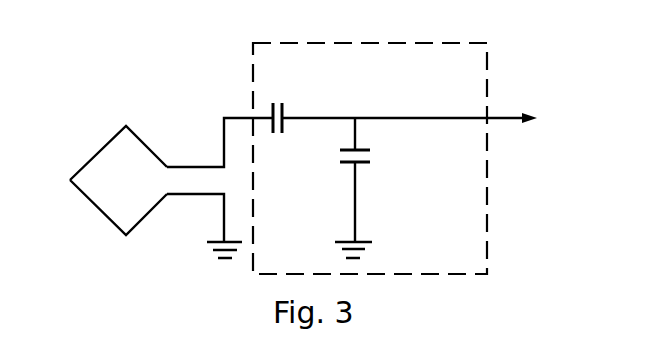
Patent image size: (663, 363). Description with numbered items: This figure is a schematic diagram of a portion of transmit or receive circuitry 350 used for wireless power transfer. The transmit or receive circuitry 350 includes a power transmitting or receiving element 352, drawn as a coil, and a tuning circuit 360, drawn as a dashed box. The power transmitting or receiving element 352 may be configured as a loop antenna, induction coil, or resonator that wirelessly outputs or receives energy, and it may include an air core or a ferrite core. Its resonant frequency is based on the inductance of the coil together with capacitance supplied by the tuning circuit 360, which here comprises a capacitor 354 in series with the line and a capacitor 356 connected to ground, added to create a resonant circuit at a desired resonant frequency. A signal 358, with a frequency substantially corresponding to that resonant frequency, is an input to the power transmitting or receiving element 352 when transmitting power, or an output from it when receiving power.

The transmit or receive circuitry 350 is at (138, 80).
The power transmitting or receiving element 352 is at (96, 154).
The capacitor 354 is at (283, 108).
The capacitor 356 is at (362, 163).
The signal 358 is at (387, 116).
The tuning circuit 360 is at (468, 43).